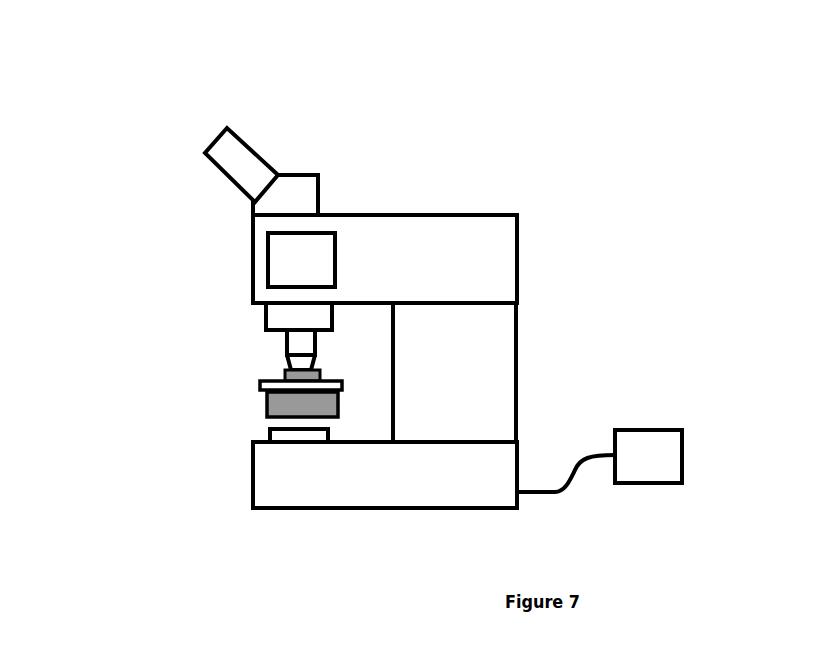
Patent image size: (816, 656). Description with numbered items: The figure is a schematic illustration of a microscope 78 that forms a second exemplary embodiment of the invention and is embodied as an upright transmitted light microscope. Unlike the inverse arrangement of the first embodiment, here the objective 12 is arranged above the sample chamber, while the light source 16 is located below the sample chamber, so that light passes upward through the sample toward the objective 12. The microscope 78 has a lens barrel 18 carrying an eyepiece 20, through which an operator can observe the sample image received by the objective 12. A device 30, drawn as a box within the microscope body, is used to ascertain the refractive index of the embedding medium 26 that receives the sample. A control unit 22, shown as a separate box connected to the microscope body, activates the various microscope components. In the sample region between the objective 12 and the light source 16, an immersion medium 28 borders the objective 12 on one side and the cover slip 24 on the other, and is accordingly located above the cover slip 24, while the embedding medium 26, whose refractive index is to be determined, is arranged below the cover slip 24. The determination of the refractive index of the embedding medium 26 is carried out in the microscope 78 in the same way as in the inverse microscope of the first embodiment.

The microscope 78 is at (194, 92).
The eyepiece 20 is at (262, 158).
The lens barrel 18 is at (252, 208).
The device 30 is at (301, 260).
The objective 12 is at (288, 355).
The immersion medium 28 is at (283, 372).
The cover slip 24 is at (260, 386).
The embedding medium 26 is at (265, 417).
The light source 16 is at (322, 440).
The control unit 22 is at (599, 461).